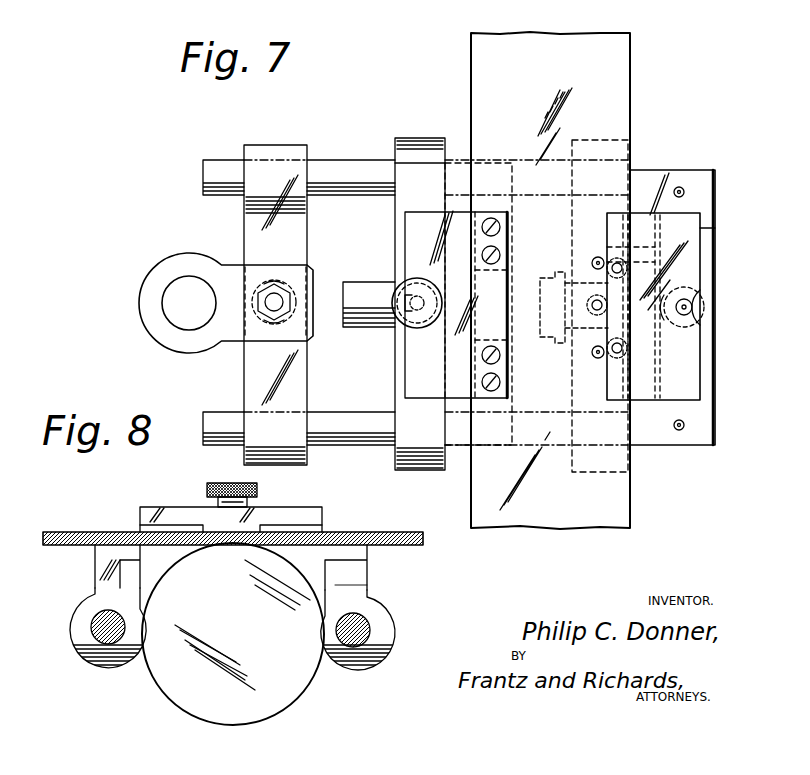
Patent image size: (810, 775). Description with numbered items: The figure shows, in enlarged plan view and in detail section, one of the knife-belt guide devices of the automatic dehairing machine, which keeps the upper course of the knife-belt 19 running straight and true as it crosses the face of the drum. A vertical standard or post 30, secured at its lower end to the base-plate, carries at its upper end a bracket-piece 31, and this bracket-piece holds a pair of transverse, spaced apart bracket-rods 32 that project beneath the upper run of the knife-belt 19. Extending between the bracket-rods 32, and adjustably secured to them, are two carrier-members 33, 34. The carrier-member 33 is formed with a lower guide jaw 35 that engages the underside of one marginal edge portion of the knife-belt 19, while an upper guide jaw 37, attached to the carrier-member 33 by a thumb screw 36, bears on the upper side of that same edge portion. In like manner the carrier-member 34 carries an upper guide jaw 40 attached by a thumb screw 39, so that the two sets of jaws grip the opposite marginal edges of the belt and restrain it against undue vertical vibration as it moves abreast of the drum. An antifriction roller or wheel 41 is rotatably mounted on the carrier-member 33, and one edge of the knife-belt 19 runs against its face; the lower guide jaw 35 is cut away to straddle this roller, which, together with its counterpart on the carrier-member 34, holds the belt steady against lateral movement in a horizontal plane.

In FIG. 7, the knife-belt 19 is at (608, 112).
In FIG. 8, the knife-belt 19 is at (380, 532).
In FIG. 7, the standard or post 30 is at (176, 306).
In FIG. 7, the bracket-piece 31 is at (252, 248).
In FIG. 7, the bracket-rods 32 is at (348, 168).
In FIG. 8, the bracket-rods 32 is at (74, 650).
In FIG. 7, the carrier-member 33 is at (396, 246).
In FIG. 8, the carrier-member 33 is at (352, 583).
In FIG. 7, the carrier-member 34 is at (708, 416).
In FIG. 8, the lower guide jaw 35 is at (120, 552).
In FIG. 7, the thumb screw 36 is at (418, 282).
In FIG. 8, the thumb screw 36 is at (207, 488).
In FIG. 7, the upper guide jaw 37 is at (497, 283).
In FIG. 8, the upper guide jaw 37 is at (150, 522).
In FIG. 7, the thumb screw 39 is at (700, 300).
In FIG. 7, the upper guide jaw 40 is at (641, 222).
In FIG. 8, the antifriction roller or wheel 41 is at (286, 679).